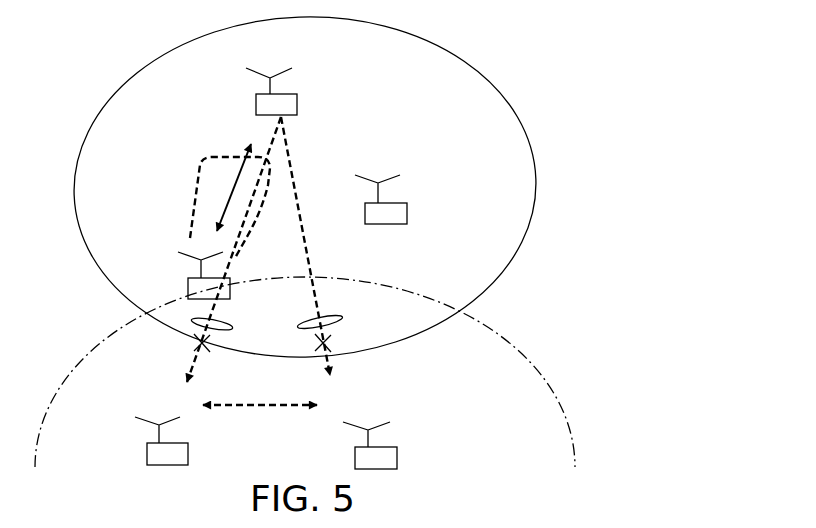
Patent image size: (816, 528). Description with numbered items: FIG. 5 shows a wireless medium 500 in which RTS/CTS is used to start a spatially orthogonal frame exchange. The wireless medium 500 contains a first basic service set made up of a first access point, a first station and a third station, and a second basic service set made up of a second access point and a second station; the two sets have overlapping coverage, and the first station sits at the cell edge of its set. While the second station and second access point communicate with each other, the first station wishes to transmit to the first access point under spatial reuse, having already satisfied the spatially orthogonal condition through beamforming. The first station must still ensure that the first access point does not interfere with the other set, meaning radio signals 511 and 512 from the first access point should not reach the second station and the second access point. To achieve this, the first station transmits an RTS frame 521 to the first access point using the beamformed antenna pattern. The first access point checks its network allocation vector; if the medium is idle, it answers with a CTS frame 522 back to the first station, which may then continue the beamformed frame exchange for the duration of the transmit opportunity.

The wireless medium 500 is at (709, 42).
The radio signal 511 is at (231, 329).
The radio signal 512 is at (334, 316).
The RTS frame 521 is at (211, 207).
The CTS frame 522 is at (231, 173).